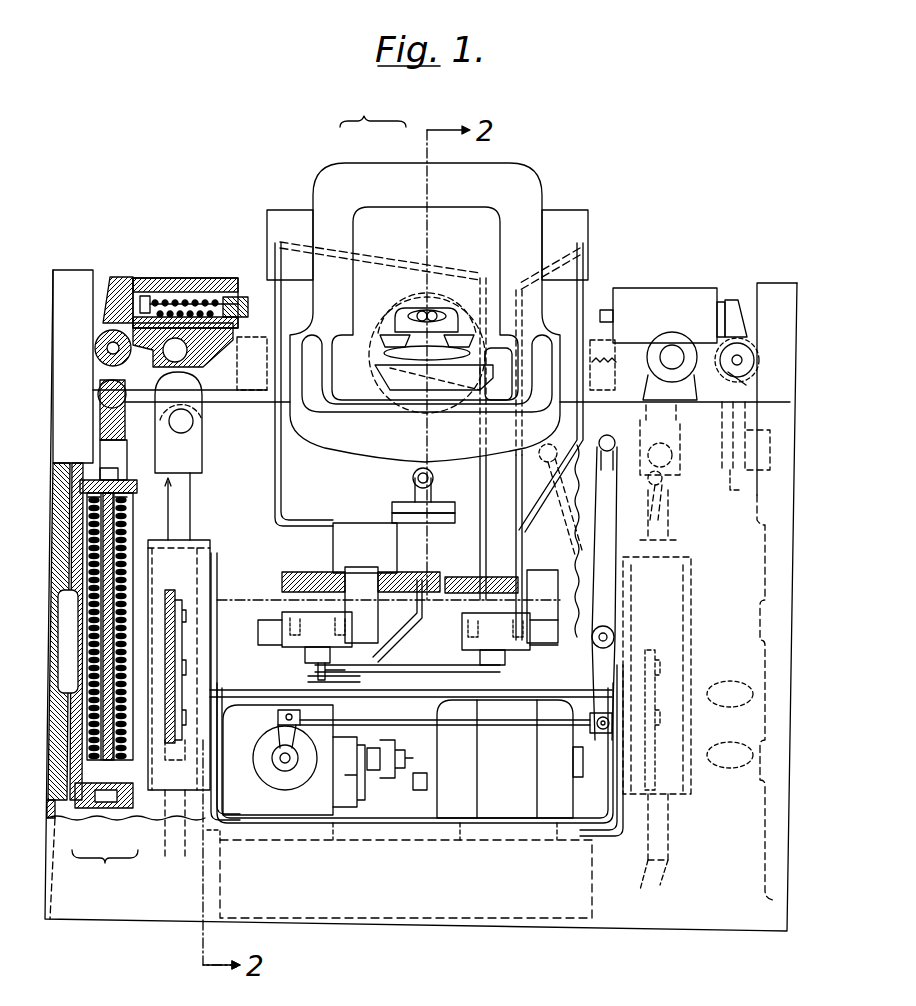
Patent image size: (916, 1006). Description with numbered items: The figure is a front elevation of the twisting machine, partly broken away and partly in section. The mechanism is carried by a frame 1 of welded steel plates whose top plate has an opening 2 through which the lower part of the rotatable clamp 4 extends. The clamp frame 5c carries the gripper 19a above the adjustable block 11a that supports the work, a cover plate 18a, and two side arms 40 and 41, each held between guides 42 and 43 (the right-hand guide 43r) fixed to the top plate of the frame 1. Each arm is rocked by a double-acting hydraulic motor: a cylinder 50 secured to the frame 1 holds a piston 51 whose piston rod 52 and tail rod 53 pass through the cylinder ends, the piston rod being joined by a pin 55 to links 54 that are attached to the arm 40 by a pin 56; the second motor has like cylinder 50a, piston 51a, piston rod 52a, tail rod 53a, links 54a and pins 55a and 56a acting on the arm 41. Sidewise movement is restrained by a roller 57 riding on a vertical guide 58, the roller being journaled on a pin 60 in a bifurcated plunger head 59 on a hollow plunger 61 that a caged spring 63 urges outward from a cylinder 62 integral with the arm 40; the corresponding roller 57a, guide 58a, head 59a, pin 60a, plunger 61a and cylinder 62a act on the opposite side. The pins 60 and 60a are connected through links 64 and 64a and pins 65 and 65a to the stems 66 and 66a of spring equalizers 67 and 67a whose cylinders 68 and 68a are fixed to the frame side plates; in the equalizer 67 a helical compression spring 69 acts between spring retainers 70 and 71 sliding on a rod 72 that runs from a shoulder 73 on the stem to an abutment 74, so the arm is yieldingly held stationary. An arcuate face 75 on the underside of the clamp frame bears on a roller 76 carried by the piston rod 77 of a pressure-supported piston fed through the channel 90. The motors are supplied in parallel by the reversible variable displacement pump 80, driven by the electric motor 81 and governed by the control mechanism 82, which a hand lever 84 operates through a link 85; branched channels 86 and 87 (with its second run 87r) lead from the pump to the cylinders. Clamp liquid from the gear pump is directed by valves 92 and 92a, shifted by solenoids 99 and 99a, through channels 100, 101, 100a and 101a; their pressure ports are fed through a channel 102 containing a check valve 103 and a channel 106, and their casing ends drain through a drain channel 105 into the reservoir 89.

The frame 1 is at (128, 905).
The opening 2 is at (290, 405).
The clamp 4 is at (373, 114).
The clamp frame 5c is at (352, 170).
The adjustable block 11a is at (390, 382).
The cover plate 18a is at (385, 237).
The gripper 19a is at (395, 345).
The arm 40 is at (292, 332).
The arm 41 is at (575, 340).
The guide 42 is at (600, 405).
The guide 43 is at (240, 382).
The guide 43r is at (605, 352).
The cylinder 50 is at (196, 540).
The cylinder 50a is at (690, 585).
The piston 51 is at (185, 676).
The piston 51a is at (680, 648).
The piston rod 52 is at (190, 492).
The piston rod 52a is at (668, 522).
The tail rod 53 is at (175, 845).
The tail rod 53a is at (641, 881).
The links 54 is at (195, 424).
The links 54a is at (670, 338).
The pin 55 is at (185, 425).
The pin 55a is at (672, 455).
The pin 56 is at (178, 362).
The pin 56a is at (672, 365).
The roller 57 is at (100, 340).
The roller 57a is at (752, 348).
The vertical guide 58 is at (73, 278).
The vertical guide 58a is at (775, 298).
The plunger head 59 is at (112, 285).
The plunger head 59a is at (735, 300).
The pin 60 is at (107, 355).
The pin 60a is at (742, 360).
The hollow plunger 61 is at (143, 290).
The hollow plunger 61a is at (722, 300).
The cylinder 62 is at (190, 278).
The cylinder 62a is at (648, 288).
The caged spring 63 is at (218, 292).
The links 64 is at (100, 378).
The links 64a is at (742, 382).
The pin 65 is at (108, 398).
The pin 65a is at (750, 425).
The stem 66 is at (118, 480).
The stem 66a is at (735, 462).
The spring equalizer 67 is at (105, 868).
The spring equalizer 67a is at (730, 755).
The cylinder 68 is at (75, 624).
The cylinder 68a is at (730, 694).
The helical compression spring 69 is at (68, 538).
The spring retainer 70 is at (133, 508).
The spring retainer 71 is at (65, 795).
The rod 72 is at (80, 665).
The shoulder 73 is at (108, 479).
The abutment 74 is at (110, 808).
The arcuate face 75 is at (398, 458).
The roller 76 is at (433, 476).
The piston rod 77 is at (410, 493).
The reversible variable displacement pump 80 is at (300, 815).
The electric motor 81 is at (508, 812).
The control mechanism 82 is at (280, 762).
The lever 84 is at (605, 485).
The link 85 is at (588, 712).
The branched channel 86 is at (612, 772).
The branched channel 87 is at (216, 565).
The branched channel 87r is at (606, 830).
The reservoir 89 is at (450, 918).
The channel 90 is at (418, 622).
The valve 92 is at (540, 640).
The valve 92a is at (272, 636).
The solenoid 99 is at (501, 606).
The solenoid 99a is at (388, 605).
The channel 100 is at (478, 508).
The channel 100a is at (272, 506).
The channel 101 is at (520, 548).
The channel 101a is at (350, 528).
The channel 102 is at (432, 660).
The check valve 103 is at (427, 783).
The drain channel 105 is at (318, 676).
The channel 106 is at (372, 660).